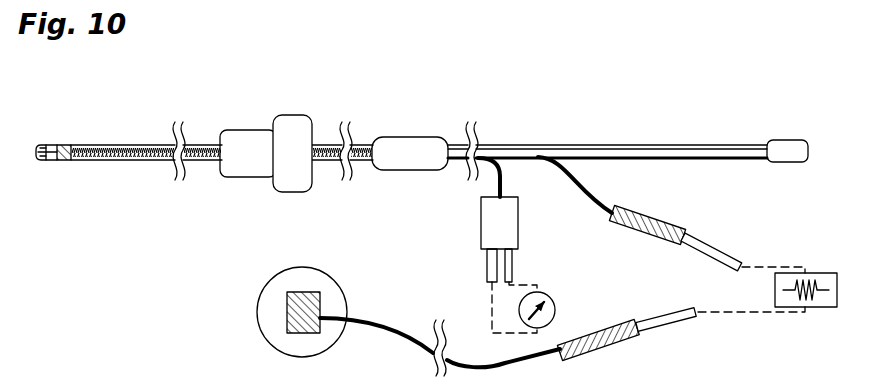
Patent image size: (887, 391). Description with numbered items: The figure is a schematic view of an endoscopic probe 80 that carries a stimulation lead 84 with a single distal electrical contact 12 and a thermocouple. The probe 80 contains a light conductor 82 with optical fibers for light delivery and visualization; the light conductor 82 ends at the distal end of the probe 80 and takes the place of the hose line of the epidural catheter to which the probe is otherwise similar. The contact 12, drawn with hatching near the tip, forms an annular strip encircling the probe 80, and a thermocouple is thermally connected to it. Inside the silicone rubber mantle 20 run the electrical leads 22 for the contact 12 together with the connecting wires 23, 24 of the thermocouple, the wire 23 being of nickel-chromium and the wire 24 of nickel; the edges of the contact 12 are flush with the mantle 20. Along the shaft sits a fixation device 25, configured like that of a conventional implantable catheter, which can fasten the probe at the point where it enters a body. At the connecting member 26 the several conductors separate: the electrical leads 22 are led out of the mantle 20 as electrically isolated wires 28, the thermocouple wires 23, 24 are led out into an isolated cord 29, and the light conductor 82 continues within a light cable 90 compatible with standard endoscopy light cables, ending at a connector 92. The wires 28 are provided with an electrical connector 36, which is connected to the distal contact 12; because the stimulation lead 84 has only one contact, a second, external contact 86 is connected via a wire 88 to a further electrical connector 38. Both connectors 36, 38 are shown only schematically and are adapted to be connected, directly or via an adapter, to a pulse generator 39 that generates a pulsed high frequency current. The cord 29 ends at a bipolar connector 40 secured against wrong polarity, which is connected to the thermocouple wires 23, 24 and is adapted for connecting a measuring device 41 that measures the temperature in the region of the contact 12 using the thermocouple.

The endoscopic probe 80 is at (422, 142).
The light conductor 82 is at (88, 145).
The distal contact 12 is at (63, 160).
The mantle 20 is at (87, 162).
The electrical leads 22 is at (140, 160).
The connecting wire 23 is at (113, 152).
The connecting wire 24 is at (157, 145).
The stimulation lead 84 is at (203, 133).
The fixation device 25 is at (263, 170).
The connecting member 26 is at (393, 168).
The electrically isolated wires 28 is at (562, 178).
The isolated cord 29 is at (492, 176).
The bipolar connector 40 is at (513, 214).
The measuring device 41 is at (555, 307).
The electrical connector 36 is at (678, 236).
The electrical connector 38 is at (640, 330).
The pulse generator 39 is at (827, 278).
The wire 88 is at (372, 326).
The external contact 86 is at (285, 325).
The light cable 90 is at (657, 144).
The connector 92 is at (788, 141).